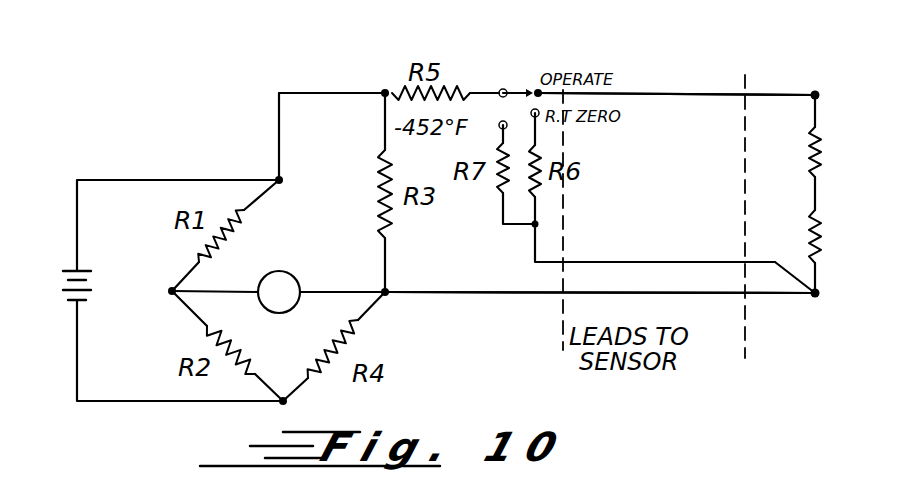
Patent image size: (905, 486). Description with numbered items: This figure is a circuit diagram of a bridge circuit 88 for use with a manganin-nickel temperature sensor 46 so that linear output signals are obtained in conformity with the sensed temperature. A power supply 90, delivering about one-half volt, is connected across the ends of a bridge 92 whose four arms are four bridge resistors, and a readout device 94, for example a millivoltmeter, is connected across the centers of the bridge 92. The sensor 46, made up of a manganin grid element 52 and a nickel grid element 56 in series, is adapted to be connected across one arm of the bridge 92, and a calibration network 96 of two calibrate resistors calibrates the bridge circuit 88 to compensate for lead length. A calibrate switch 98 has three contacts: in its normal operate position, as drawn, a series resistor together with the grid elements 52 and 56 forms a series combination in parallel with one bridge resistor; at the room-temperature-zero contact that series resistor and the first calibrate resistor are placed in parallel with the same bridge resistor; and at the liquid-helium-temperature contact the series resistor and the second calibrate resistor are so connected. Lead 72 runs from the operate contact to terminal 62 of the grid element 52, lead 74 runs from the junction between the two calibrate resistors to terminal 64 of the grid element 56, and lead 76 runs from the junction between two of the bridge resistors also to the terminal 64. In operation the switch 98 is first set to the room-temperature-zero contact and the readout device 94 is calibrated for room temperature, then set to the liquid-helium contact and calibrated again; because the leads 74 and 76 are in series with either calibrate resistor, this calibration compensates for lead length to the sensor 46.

The bridge circuit 88 is at (232, 140).
The power supply 90 is at (56, 286).
The bridge 92 is at (327, 242).
The readout device 94 is at (270, 314).
The calibration network 96 is at (484, 220).
The calibrate switch 98 is at (505, 87).
The lead 72 is at (617, 93).
The lead 74 is at (613, 262).
The lead 76 is at (618, 295).
The terminal 62 is at (826, 70).
The terminal 64 is at (819, 294).
The manganin grid element 52 is at (820, 150).
The nickel grid element 56 is at (820, 232).
The manganin-nickel temperature sensor 46 is at (804, 237).